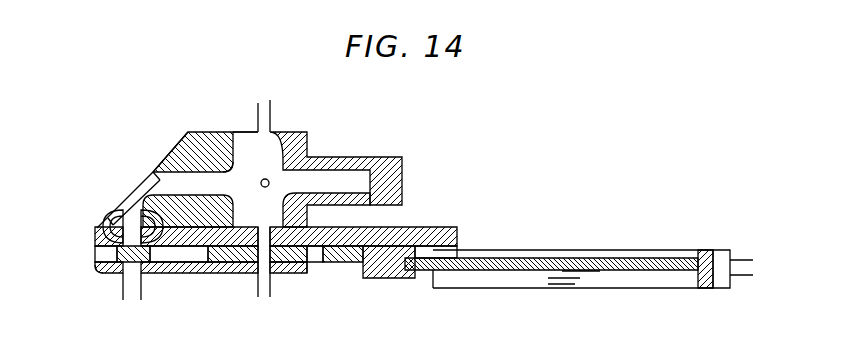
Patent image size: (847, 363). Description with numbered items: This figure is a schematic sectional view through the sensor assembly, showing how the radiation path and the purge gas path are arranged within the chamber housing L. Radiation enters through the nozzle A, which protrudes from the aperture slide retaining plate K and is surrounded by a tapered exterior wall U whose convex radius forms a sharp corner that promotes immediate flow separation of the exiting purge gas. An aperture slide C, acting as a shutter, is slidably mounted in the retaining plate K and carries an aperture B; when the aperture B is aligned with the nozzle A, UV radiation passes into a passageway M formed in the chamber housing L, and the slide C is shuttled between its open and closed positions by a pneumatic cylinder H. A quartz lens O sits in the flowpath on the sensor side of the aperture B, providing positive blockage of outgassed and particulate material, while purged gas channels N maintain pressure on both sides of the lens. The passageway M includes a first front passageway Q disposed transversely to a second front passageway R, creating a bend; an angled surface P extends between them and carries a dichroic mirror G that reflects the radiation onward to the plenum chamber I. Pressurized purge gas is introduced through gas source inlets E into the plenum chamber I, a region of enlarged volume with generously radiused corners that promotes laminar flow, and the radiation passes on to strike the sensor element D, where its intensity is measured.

The gas source inlet E is at (259, 91).
The chamber housing L is at (257, 130).
The second front passageway R is at (216, 168).
The angled surface P is at (162, 162).
The dichroic mirror G is at (146, 182).
The passageway M is at (130, 192).
The first front passageway Q is at (120, 218).
The purged gas channel N is at (97, 246).
The tapered exterior wall U is at (109, 292).
The nozzle A is at (130, 292).
The quartz lens O is at (140, 272).
The aperture B is at (197, 262).
The aperture slide C is at (237, 262).
The aperture slide retaining plate K is at (293, 273).
The plenum chamber I is at (274, 176).
The sensor element D is at (403, 168).
The pneumatic cylinder H is at (638, 250).